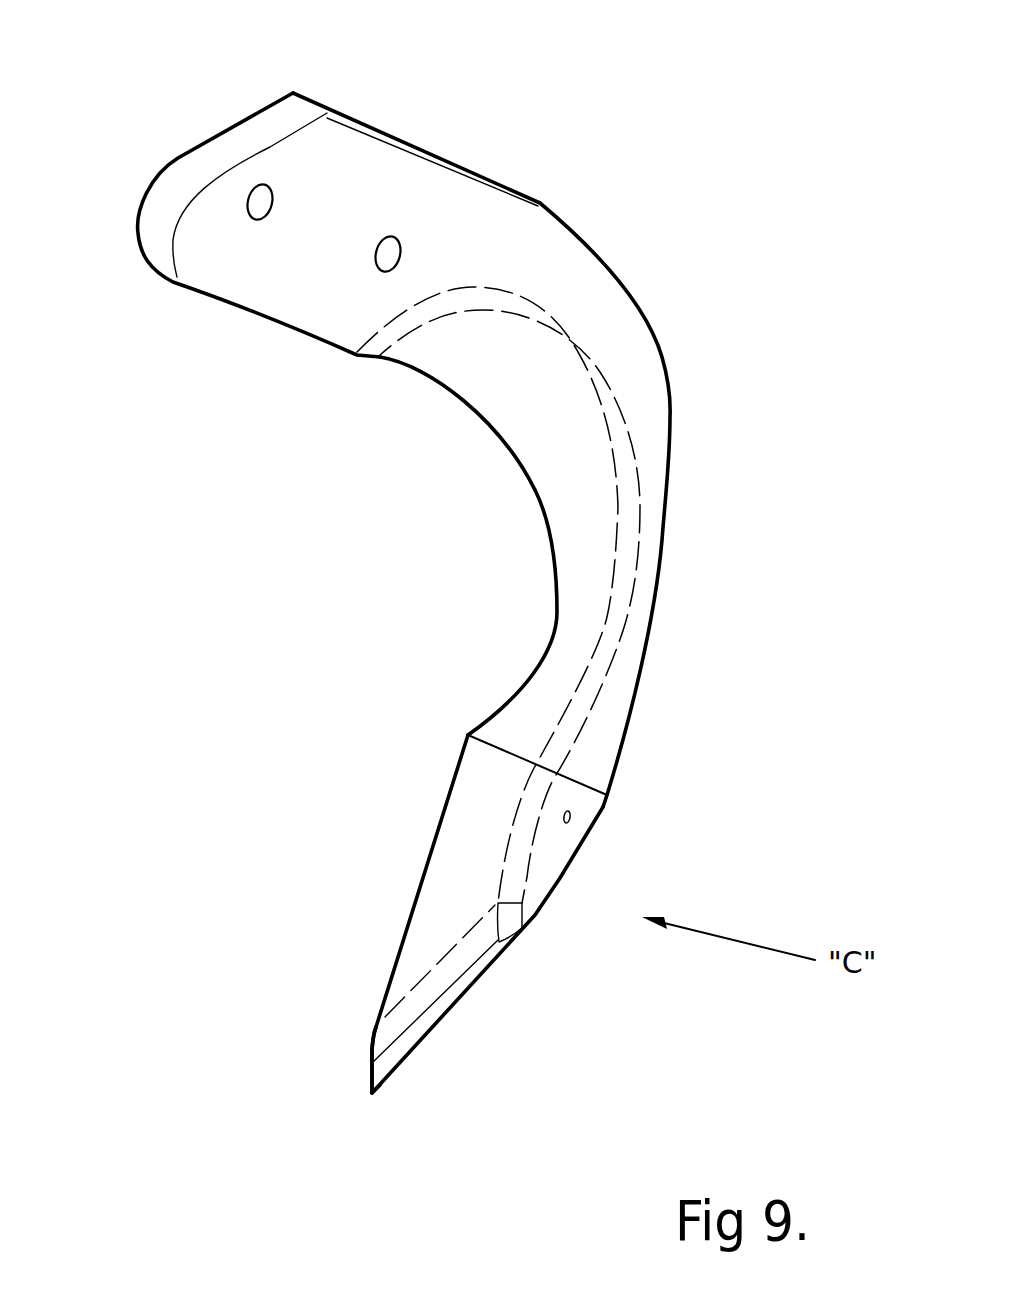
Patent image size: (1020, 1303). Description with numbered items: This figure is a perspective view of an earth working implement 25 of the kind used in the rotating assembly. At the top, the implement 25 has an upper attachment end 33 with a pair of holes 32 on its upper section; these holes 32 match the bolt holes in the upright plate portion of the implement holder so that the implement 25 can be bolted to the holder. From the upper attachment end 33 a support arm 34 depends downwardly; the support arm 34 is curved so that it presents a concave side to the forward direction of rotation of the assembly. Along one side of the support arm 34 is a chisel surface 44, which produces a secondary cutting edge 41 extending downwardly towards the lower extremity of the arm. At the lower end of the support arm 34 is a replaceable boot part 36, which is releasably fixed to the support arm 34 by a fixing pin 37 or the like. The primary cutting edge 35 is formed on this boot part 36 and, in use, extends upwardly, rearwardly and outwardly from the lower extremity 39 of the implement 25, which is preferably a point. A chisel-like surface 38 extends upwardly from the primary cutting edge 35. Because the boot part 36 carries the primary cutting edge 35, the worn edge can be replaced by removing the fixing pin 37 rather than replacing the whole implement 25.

The earth working implement 25 is at (648, 315).
The holes 32 is at (260, 200).
The upper attachment end 33 is at (185, 268).
The support arm 34 is at (660, 470).
The primary cutting edge 35 is at (407, 1062).
The replaceable boot part 36 is at (450, 795).
The fixing pin 37 is at (571, 819).
The chisel-like surface 38 is at (475, 972).
The lower extremity 39 is at (370, 1095).
The secondary cutting edge 41 is at (547, 535).
The chisel surface 44 is at (523, 438).